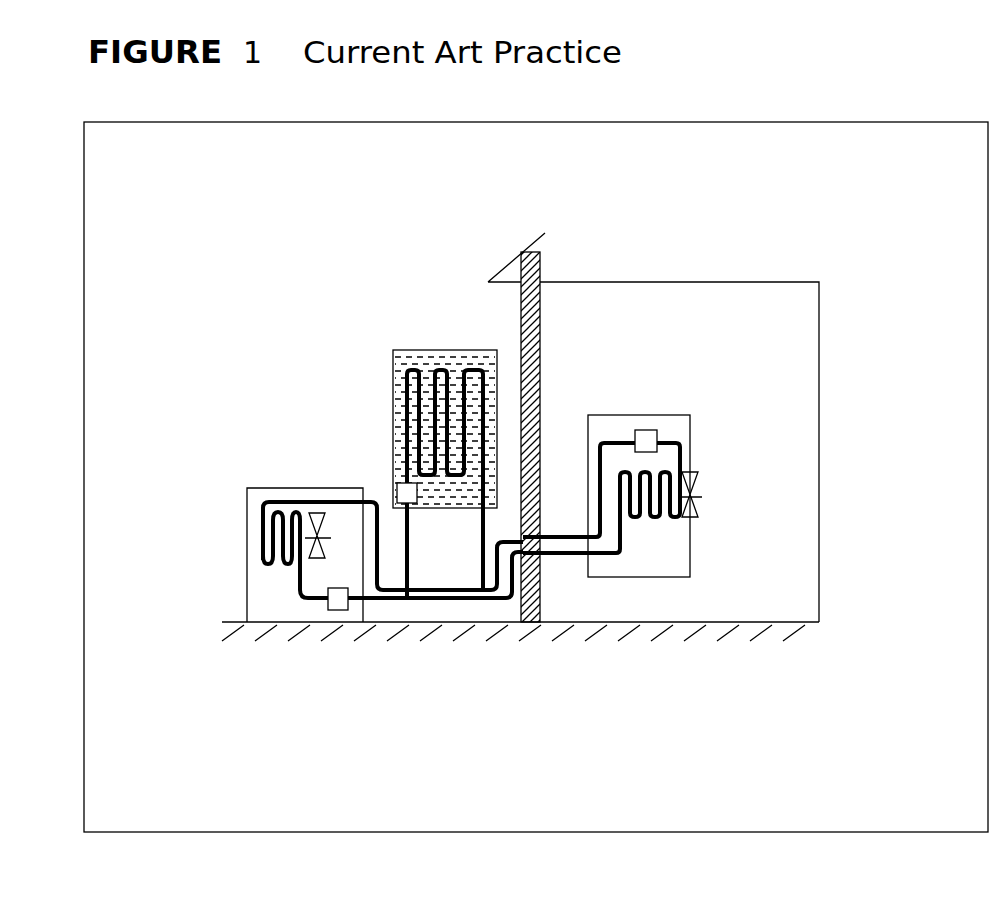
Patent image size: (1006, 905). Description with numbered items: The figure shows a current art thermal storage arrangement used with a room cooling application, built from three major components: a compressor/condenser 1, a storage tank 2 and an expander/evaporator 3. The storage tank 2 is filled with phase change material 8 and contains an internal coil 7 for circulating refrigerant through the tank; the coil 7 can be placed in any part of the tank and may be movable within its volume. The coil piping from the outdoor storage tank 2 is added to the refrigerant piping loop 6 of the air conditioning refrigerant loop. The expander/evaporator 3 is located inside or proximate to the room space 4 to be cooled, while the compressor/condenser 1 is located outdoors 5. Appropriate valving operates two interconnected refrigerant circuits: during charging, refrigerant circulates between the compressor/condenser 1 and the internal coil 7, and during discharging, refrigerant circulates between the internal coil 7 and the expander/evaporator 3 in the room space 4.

The compressor/condenser 1 is at (186, 513).
The storage tank 2 is at (396, 409).
The expander/evaporator 3 is at (761, 270).
The room space 4 is at (866, 426).
The outdoors 5 is at (196, 395).
The refrigerant piping loop 6 is at (460, 597).
The internal coil 7 is at (428, 272).
The phase change material 8 is at (337, 287).